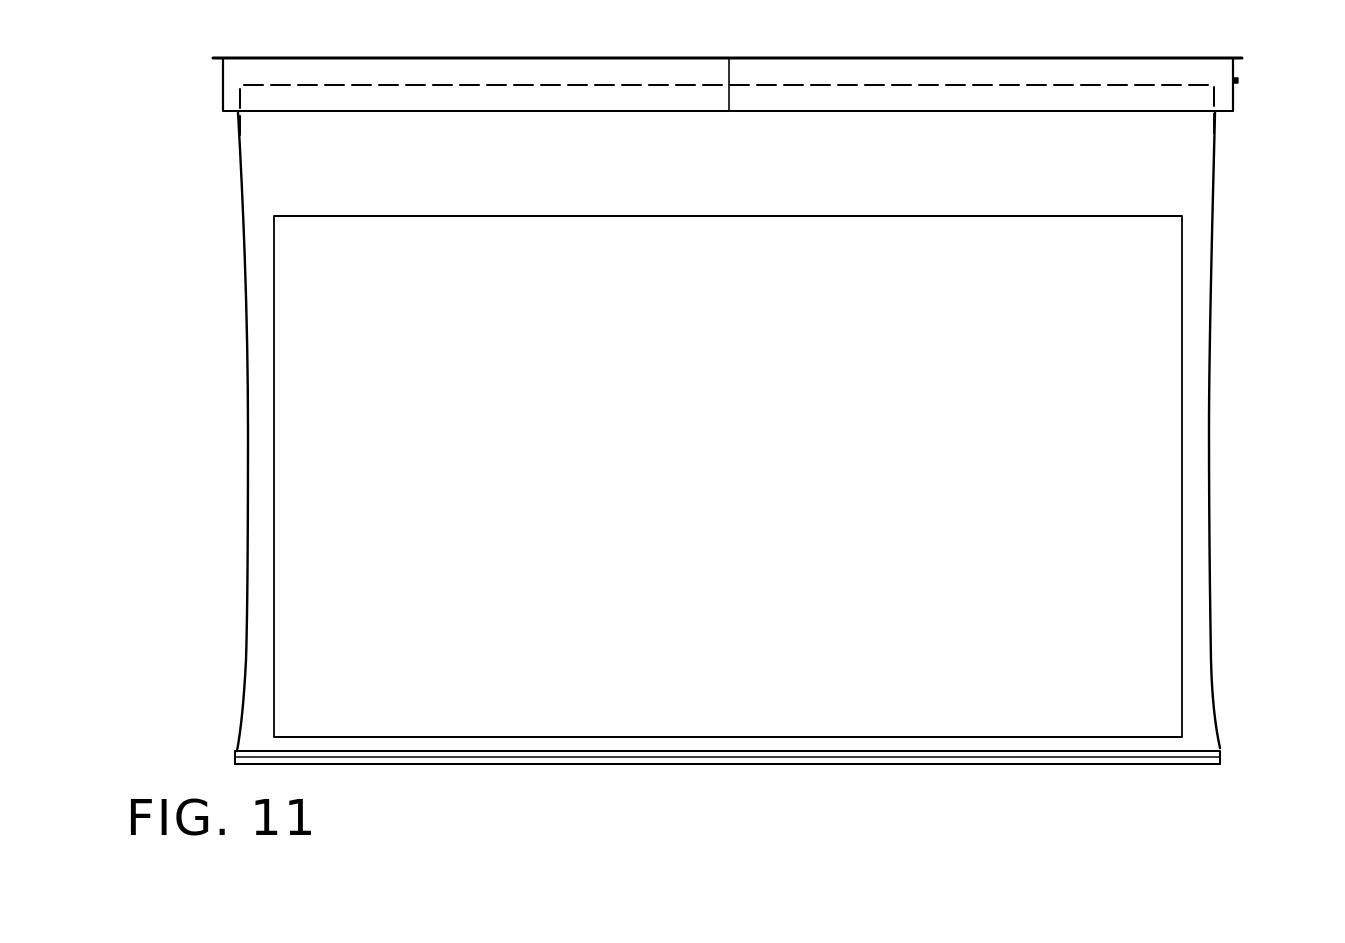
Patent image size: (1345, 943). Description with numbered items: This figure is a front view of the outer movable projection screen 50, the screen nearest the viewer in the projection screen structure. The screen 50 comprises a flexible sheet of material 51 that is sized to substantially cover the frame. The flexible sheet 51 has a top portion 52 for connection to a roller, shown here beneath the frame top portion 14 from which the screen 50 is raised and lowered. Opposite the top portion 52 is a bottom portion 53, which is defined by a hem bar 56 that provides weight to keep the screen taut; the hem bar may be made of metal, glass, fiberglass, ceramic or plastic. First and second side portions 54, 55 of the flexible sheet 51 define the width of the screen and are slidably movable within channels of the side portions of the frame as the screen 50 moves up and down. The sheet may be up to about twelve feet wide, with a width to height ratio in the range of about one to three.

The frame top portion 14 is at (833, 57).
The outer movable projection screen 50 is at (739, 431).
The flexible sheet of material 51 is at (651, 260).
The top portion 52 is at (573, 83).
The bottom portion 53 is at (745, 750).
The first side portion 54 is at (248, 500).
The second side portion 55 is at (1210, 518).
The hem bar 56 is at (820, 764).